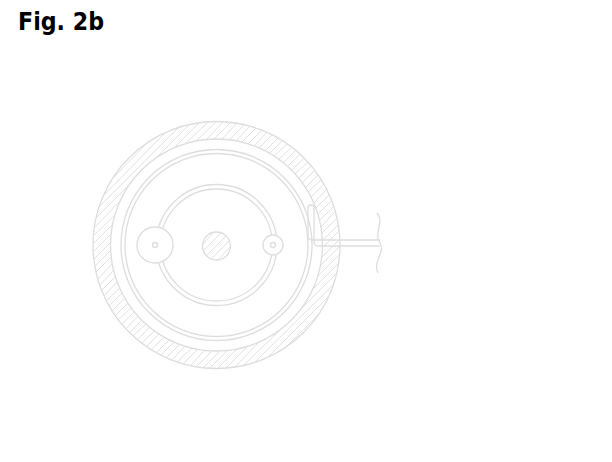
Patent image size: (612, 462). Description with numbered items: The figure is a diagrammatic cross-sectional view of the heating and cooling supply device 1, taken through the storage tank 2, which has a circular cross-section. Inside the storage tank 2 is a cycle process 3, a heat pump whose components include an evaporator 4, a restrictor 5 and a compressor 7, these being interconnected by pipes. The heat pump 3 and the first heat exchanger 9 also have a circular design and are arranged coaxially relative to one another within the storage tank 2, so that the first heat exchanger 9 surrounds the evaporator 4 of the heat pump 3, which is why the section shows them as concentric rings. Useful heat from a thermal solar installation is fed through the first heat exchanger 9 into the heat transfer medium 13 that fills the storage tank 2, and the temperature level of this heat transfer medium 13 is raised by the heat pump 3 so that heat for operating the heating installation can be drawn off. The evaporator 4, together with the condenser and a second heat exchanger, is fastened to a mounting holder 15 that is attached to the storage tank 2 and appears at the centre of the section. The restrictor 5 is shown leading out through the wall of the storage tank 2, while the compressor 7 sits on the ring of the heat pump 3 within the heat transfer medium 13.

The heating and cooling supply device 1 is at (258, 105).
The storage tank 2 is at (178, 130).
The cycle process 3 is at (203, 307).
The evaporator 4 is at (257, 197).
The restrictor 5 is at (315, 207).
The compressor 7 is at (137, 238).
The first heat exchanger 9 is at (307, 280).
The heat transfer medium 13 is at (172, 187).
The mounting holder 15 is at (211, 259).